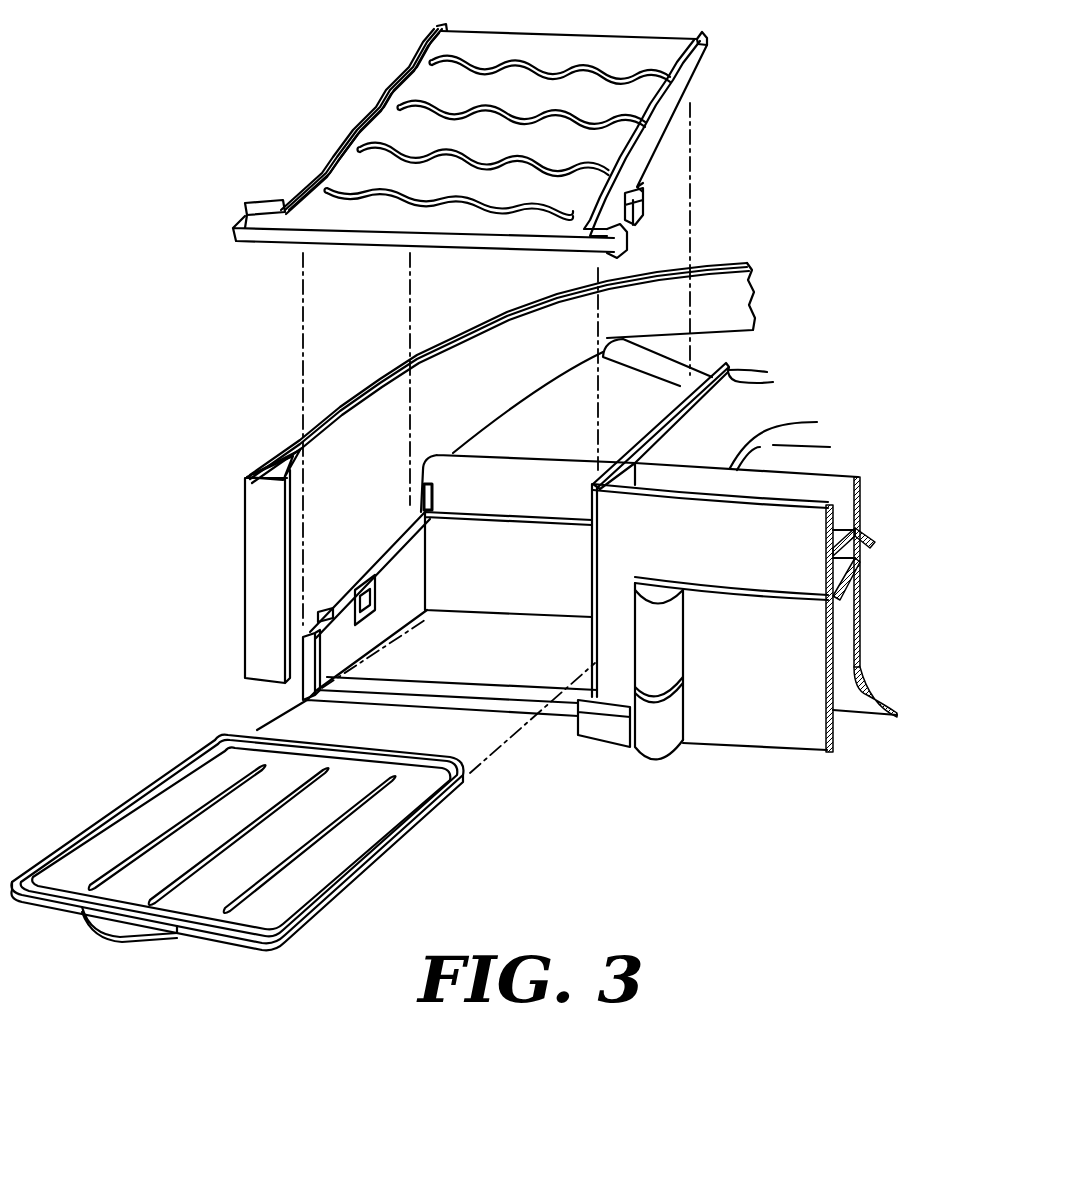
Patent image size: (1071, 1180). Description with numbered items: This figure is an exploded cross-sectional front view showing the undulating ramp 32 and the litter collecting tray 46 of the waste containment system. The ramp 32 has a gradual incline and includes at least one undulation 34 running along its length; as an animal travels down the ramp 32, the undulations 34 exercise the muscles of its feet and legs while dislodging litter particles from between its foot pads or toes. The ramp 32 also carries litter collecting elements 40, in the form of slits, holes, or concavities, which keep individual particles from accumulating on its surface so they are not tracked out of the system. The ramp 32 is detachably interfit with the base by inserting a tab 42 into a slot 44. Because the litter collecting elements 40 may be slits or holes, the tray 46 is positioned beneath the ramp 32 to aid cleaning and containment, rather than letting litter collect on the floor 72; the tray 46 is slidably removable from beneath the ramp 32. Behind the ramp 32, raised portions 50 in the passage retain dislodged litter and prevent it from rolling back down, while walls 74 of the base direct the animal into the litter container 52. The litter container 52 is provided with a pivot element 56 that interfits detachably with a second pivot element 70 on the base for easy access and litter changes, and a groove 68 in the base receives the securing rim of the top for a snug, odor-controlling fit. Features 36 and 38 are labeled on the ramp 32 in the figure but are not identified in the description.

The ramp 32 is at (683, 88).
The undulation 34 is at (422, 34).
The rail channel 36 is at (432, 80).
The rail flange 38 is at (395, 107).
The litter collecting elements 40 is at (598, 64).
The tab 42 is at (705, 34).
The slot 44 is at (424, 496).
The tray 46 is at (388, 810).
The raised portions 50 is at (677, 368).
The litter container 52 is at (805, 733).
The pivot element 56 is at (667, 663).
The groove 68 is at (802, 493).
The second pivot element 70 is at (662, 755).
The floor 72 is at (512, 668).
The walls 74 is at (458, 370).